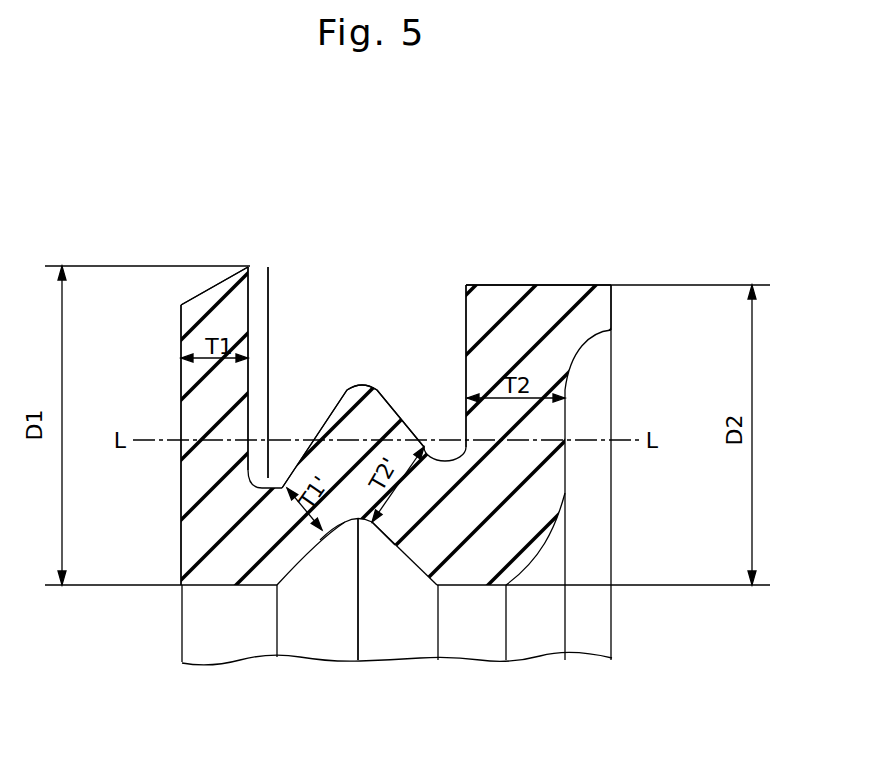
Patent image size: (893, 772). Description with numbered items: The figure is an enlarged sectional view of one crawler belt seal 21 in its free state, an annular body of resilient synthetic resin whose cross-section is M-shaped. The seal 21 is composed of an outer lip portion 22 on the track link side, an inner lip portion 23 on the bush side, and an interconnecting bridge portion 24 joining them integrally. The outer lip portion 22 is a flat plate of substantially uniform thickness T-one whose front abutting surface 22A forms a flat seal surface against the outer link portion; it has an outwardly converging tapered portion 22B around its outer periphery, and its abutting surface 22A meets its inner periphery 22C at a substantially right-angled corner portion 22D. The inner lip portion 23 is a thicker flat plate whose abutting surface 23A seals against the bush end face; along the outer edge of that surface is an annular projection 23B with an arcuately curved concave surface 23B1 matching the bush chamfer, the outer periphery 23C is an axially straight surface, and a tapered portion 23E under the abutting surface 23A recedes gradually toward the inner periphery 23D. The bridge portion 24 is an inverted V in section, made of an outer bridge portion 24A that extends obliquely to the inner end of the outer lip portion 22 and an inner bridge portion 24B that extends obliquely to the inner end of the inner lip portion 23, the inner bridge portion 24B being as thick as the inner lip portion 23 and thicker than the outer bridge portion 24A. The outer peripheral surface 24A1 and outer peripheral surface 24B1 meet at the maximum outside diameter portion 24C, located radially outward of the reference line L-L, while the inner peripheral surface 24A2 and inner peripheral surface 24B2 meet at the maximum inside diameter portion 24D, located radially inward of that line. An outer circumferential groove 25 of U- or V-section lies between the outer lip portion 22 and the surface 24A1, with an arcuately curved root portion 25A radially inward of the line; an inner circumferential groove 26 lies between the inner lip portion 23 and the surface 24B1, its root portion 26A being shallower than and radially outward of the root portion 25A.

The seal 21 is at (605, 280).
The outer lip portion 22 is at (227, 313).
The abutting surface 22A is at (181, 513).
The tapered portion 22B is at (190, 299).
The inner periphery 22C is at (230, 587).
The corner portion 22D is at (183, 590).
The inner lip portion 23 is at (515, 323).
The abutting surface 23A is at (567, 493).
The annular projection 23B is at (597, 311).
The concave surface 23B1 is at (580, 352).
The outer periphery 23C is at (556, 285).
The inner periphery 23D is at (478, 587).
The tapered portion 23E is at (530, 543).
The interconnecting bridge portion 24 is at (367, 413).
The outer bridge portion 24A is at (297, 578).
The outer peripheral surface 24A1 is at (322, 423).
The inner peripheral surface 24A2 is at (333, 570).
The inner bridge portion 24B is at (418, 590).
The outer peripheral surface 24B1 is at (400, 417).
The inner peripheral surface 24B2 is at (398, 583).
The maximum outside diameter portion 24C is at (350, 393).
The maximum inside diameter portion 24D is at (368, 590).
The outer circumferential groove 25 is at (290, 427).
The root portion 25A is at (265, 470).
The inner circumferential groove 26 is at (427, 417).
The root portion 26A is at (447, 445).